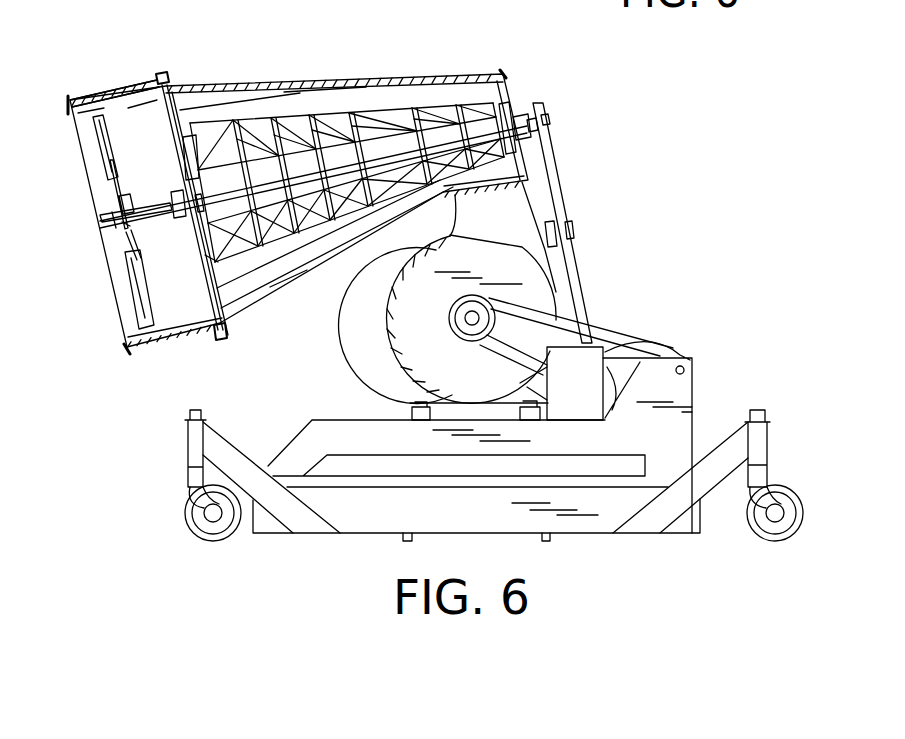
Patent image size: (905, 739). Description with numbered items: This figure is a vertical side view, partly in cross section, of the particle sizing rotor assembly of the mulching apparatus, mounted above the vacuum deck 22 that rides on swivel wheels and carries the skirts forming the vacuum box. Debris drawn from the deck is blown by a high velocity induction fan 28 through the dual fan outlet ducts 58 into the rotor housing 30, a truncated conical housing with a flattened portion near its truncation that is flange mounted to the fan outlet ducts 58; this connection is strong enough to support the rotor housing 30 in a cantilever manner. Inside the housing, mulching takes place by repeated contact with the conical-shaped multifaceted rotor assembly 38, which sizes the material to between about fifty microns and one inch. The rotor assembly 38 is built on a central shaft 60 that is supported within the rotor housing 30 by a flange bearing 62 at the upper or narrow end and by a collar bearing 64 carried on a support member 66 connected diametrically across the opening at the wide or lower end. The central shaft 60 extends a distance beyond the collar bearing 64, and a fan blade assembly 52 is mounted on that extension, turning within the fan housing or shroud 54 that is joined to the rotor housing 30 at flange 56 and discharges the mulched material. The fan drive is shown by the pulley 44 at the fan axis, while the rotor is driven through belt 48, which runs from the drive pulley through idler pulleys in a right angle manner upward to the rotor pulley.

The vacuum deck 22 is at (482, 524).
The high velocity induction fan 28 is at (387, 363).
The rotor housing 30 is at (257, 80).
The rotor assembly 38 is at (376, 92).
The drive pulley 44 is at (470, 317).
The belt 48 is at (560, 192).
The fan blade assembly 52 is at (130, 283).
The fan housing or shroud 54 is at (93, 100).
The flange 56 is at (162, 73).
The fan outlet duct 58 is at (508, 168).
The central shaft 60 is at (157, 213).
The flange bearing 62 is at (518, 112).
The collar bearing 64 is at (173, 192).
The support member 66 is at (207, 283).